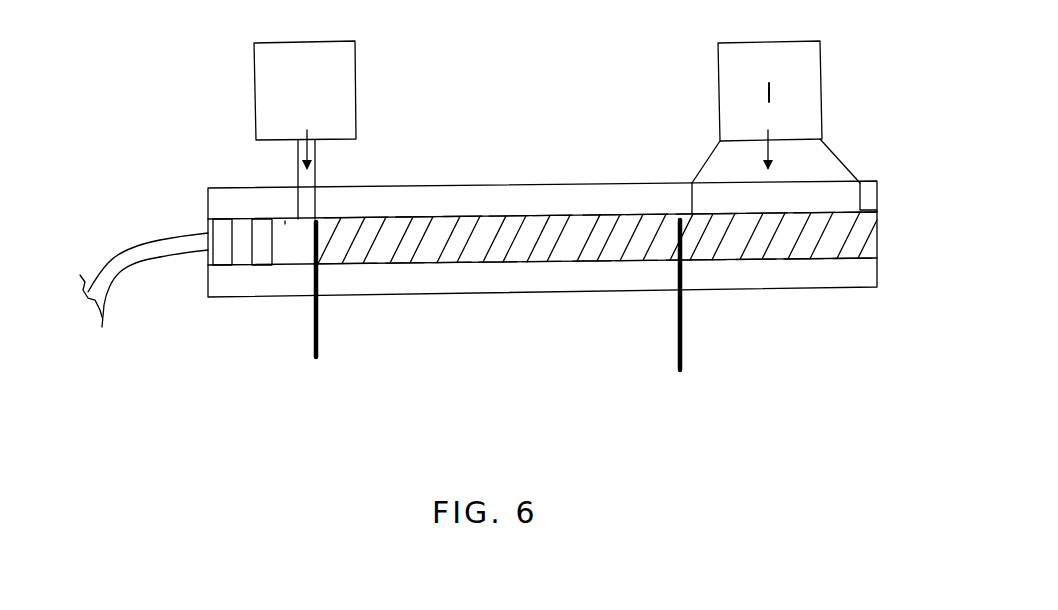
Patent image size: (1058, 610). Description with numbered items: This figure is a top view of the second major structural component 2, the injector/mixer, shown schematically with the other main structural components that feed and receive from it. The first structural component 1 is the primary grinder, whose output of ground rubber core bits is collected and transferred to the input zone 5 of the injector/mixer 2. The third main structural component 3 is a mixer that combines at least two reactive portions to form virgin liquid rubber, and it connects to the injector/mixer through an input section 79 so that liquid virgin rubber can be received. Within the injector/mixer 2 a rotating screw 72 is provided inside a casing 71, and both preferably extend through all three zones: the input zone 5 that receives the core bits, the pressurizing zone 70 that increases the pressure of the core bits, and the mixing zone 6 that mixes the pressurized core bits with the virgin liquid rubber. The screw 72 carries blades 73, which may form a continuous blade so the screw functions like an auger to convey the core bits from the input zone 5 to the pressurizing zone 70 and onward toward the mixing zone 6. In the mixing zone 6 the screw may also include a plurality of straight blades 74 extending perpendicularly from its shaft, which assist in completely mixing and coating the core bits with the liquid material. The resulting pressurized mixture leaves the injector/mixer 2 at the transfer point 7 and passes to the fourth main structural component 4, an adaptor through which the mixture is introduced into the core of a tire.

The first structural component 1 is at (784, 127).
The second structural component 2 is at (590, 150).
The third main structural component 3 is at (305, 104).
The fourth main structural component 4 is at (118, 226).
The input zone 5 is at (739, 259).
The mixing zone 6 is at (262, 266).
The transfer point 7 is at (207, 227).
The pressurizing zone 70 is at (532, 263).
The casing 71 is at (403, 295).
The rotating screw 72 is at (488, 222).
The blades 73 is at (797, 249).
The straight blades 74 is at (300, 258).
The input section 79 is at (313, 197).